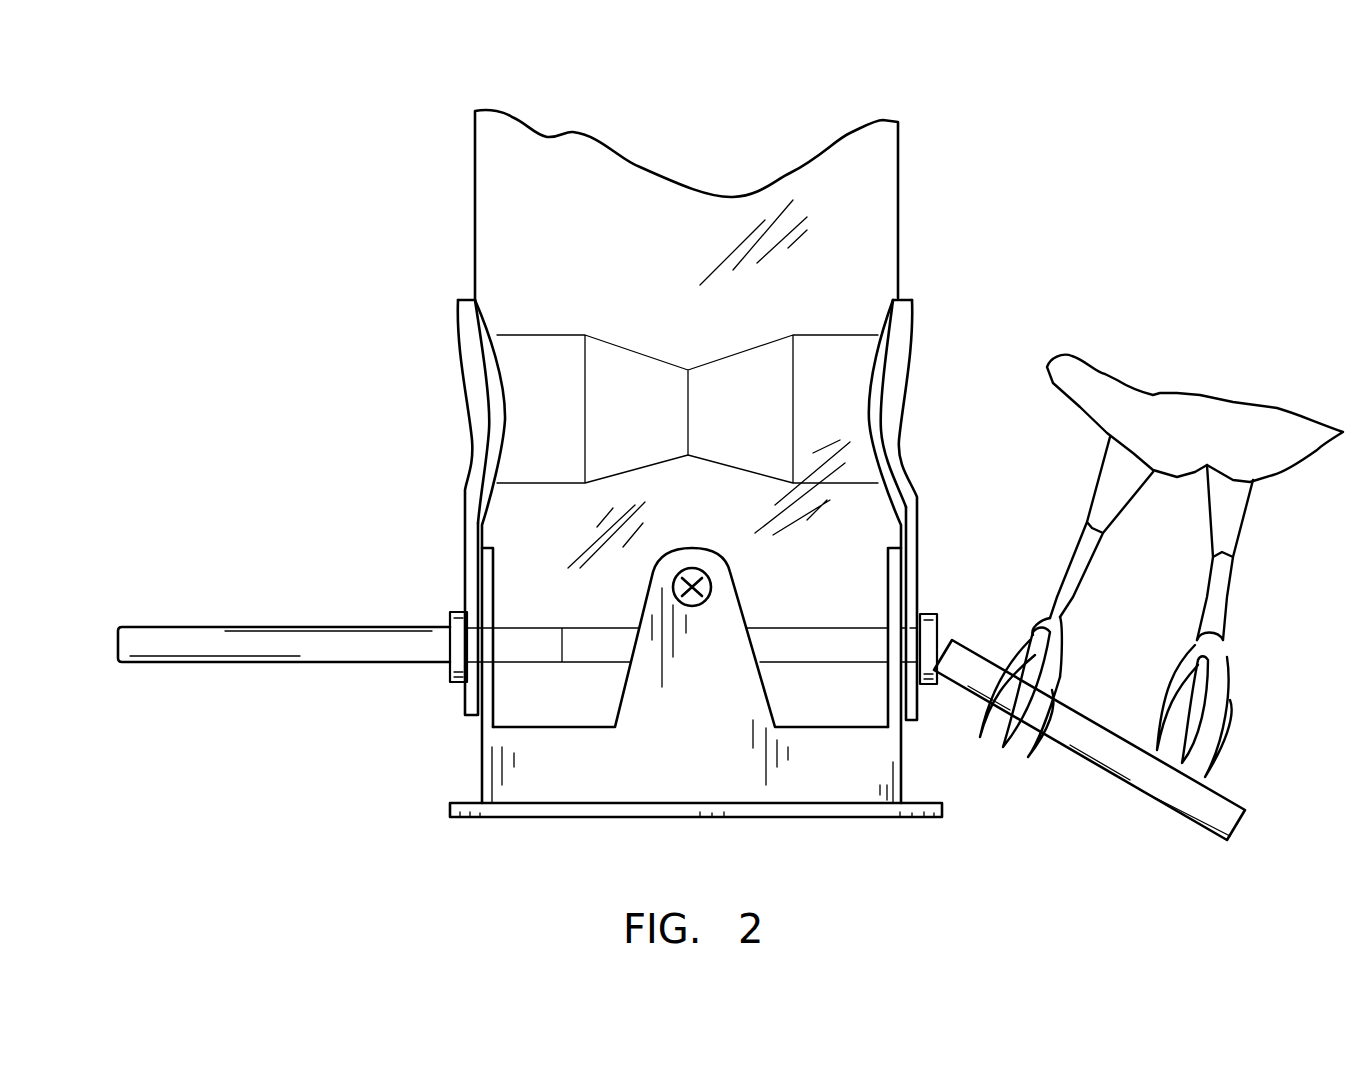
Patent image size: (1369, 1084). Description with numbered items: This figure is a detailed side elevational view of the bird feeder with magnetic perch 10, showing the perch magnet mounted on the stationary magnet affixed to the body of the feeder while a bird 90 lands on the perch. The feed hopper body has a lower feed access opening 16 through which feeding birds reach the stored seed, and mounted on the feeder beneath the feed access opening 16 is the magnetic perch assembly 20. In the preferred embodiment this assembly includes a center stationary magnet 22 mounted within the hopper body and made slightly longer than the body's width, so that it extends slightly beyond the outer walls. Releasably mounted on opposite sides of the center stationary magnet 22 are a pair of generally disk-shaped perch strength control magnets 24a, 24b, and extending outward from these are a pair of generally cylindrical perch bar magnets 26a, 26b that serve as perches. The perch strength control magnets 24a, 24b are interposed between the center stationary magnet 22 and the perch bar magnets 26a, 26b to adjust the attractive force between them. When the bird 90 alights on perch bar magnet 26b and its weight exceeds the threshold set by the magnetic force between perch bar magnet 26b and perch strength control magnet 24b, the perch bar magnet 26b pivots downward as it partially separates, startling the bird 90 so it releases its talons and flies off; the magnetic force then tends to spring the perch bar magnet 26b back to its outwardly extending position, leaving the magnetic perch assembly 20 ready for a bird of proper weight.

The bird feeder with magnetic perch 10 is at (923, 202).
The feed access opening 16 is at (922, 403).
The magnetic perch assembly 20 is at (585, 680).
The center stationary magnet 22 is at (792, 652).
The perch strength control magnet 24a is at (453, 610).
The perch strength control magnet 24b is at (938, 612).
The perch bar magnet 26a is at (280, 648).
The perch bar magnet 26b is at (1115, 752).
The bird 90 is at (1160, 418).